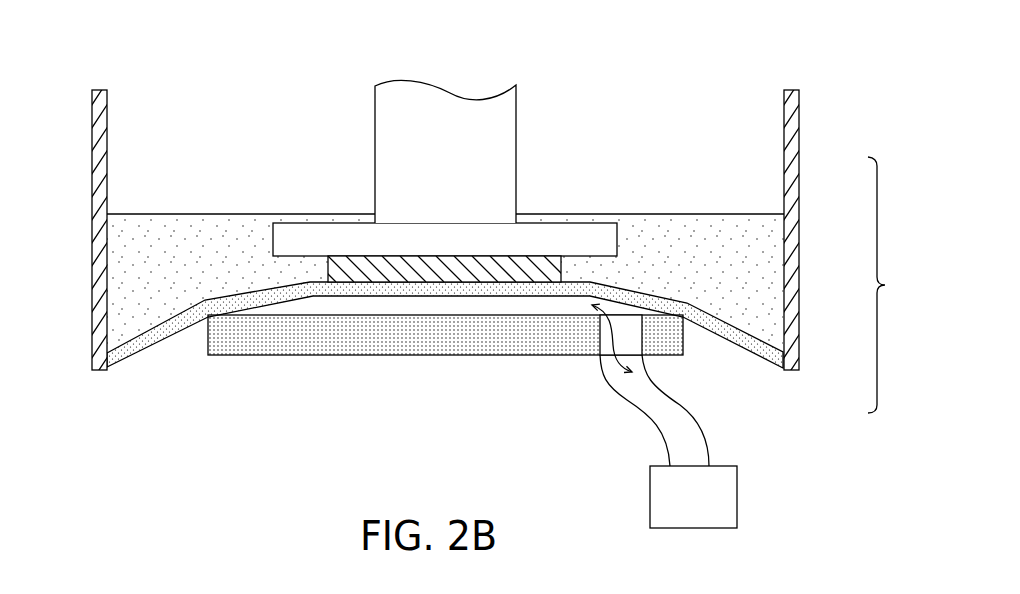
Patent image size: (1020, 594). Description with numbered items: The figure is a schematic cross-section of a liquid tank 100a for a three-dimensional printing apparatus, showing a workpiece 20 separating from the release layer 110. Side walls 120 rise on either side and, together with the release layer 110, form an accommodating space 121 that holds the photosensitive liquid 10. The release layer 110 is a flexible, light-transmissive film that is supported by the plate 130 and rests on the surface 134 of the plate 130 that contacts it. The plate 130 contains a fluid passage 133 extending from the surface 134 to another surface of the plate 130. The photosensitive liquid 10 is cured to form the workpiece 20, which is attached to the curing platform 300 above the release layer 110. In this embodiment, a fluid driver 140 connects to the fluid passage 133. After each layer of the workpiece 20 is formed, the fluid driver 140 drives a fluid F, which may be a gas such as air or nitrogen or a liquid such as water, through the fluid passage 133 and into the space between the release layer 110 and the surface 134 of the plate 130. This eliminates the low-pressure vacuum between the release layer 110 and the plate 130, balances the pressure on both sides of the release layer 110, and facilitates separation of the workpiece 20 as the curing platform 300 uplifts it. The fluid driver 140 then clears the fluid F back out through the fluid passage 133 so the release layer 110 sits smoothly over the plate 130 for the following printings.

The photosensitive liquid 10 is at (157, 230).
The workpiece 20 is at (345, 272).
The curing platform 300 is at (566, 238).
The release layer 110 is at (777, 342).
The side walls 120 is at (102, 163).
The accommodating space 121 is at (712, 155).
The plate 130 is at (536, 319).
The fluid passage 133 is at (628, 325).
The surface 134 is at (513, 305).
The fluid driver 140 is at (718, 487).
The liquid tank 100a is at (907, 285).
The fluid F is at (616, 358).